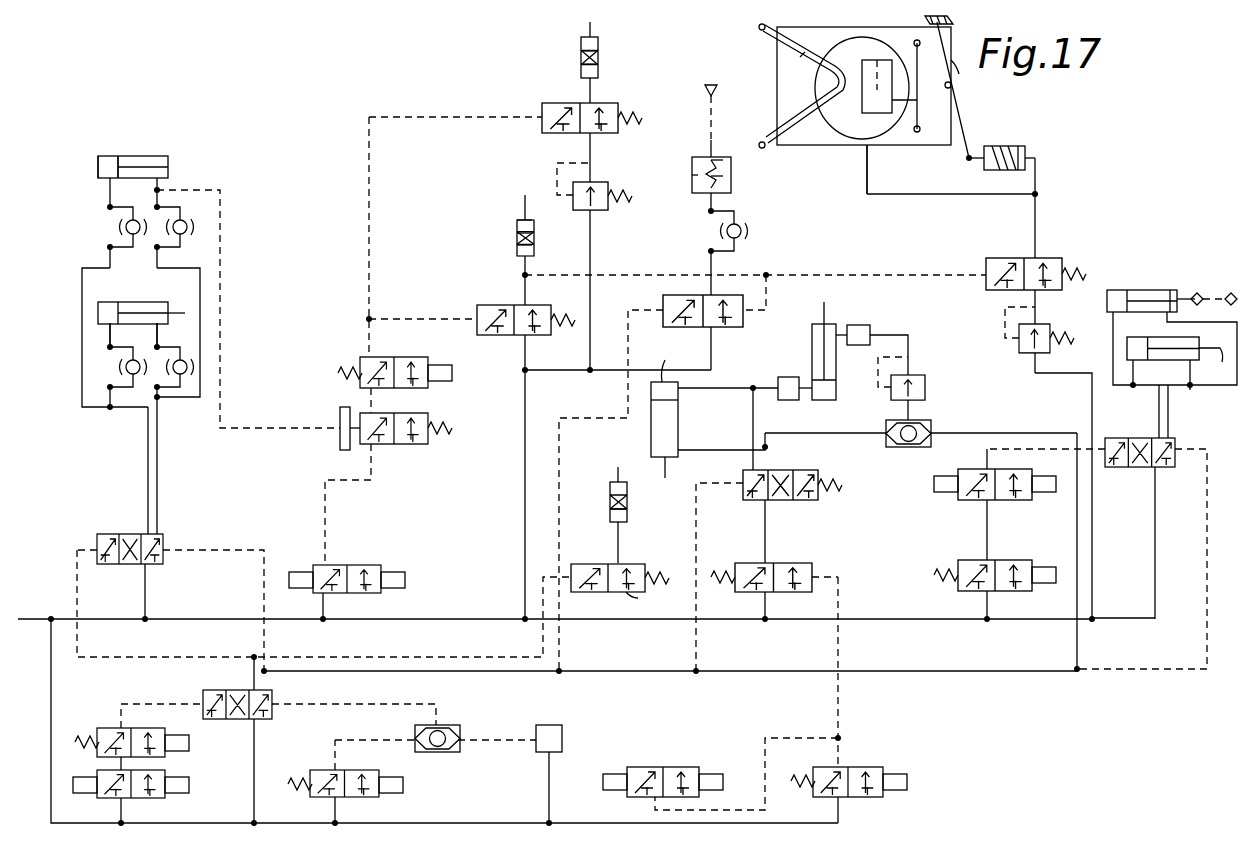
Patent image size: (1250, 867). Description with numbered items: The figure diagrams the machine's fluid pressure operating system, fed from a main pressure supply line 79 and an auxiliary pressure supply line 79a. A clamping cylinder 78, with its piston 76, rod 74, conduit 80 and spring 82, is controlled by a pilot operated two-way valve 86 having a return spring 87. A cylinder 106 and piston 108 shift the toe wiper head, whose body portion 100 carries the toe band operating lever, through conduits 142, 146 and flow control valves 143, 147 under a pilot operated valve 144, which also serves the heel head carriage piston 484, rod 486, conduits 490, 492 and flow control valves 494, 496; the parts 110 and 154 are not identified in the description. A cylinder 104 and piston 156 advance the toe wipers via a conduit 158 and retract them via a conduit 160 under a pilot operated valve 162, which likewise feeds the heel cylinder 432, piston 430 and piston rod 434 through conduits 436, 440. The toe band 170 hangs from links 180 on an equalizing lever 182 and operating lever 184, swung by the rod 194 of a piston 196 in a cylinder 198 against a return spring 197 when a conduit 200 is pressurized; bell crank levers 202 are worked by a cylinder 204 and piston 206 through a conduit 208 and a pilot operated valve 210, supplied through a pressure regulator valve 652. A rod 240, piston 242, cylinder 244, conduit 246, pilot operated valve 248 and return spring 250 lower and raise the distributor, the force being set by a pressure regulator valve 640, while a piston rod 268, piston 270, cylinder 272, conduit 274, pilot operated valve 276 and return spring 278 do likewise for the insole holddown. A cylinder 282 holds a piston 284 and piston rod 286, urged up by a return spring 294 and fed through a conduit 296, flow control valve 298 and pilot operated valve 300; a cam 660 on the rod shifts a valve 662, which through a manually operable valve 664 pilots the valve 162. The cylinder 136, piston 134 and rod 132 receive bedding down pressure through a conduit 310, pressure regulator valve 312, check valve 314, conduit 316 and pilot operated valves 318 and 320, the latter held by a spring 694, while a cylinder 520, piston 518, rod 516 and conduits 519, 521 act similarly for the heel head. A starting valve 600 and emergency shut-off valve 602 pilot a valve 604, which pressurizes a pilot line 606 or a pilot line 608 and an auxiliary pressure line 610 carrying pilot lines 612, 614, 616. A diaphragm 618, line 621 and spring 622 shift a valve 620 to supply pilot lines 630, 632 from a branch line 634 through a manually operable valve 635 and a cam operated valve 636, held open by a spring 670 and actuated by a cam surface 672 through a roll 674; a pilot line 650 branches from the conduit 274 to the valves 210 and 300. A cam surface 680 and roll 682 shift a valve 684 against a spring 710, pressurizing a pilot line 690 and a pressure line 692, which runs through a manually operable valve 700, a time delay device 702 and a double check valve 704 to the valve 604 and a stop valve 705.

The supply pressure line 79 is at (32, 617).
The supply pressure line 79a is at (51, 722).
The valve line 74 is at (610, 483).
The valve element 76 is at (627, 509).
The solenoid 78 is at (610, 495).
The line 80 is at (620, 543).
The cylinder 82 is at (140, 302).
The valve outlet 86 is at (633, 599).
The valve 87 is at (672, 574).
The hand lever 100 is at (953, 18).
The cylinder 104 is at (1165, 290).
The cylinder 106 is at (150, 160).
The cylinder end 108 is at (98, 168).
The piston 110 is at (168, 168).
The cylinder 132 is at (824, 324).
The block 134 is at (836, 384).
The line 136 is at (812, 345).
The line 142 is at (110, 194).
The check valve 143 is at (105, 228).
The valve 144 is at (102, 538).
The line 146 is at (160, 184).
The check valve 147 is at (185, 228).
The piston rod 154 is at (1178, 290).
The line 156 is at (1123, 290).
The line 158 is at (1118, 336).
The line 160 is at (1190, 328).
The valve 162 is at (1172, 442).
The arm 170 is at (799, 62).
The housing 180 is at (760, 27).
The lever link 182 is at (959, 74).
The link 184 is at (960, 140).
The line 194 is at (970, 192).
The line 196 is at (1025, 158).
The element 197 is at (1018, 146).
The valve 198 is at (1000, 146).
The line 200 is at (1037, 180).
The arm 202 is at (790, 48).
The cylinder 204 is at (862, 64).
The link 206 is at (922, 86).
The line 208 is at (868, 178).
The valve 210 is at (1036, 258).
The line 240 is at (587, 30).
The element 242 is at (581, 68).
The solenoid 244 is at (598, 56).
The spring 246 is at (591, 96).
The valve 248 is at (560, 103).
The element 250 is at (581, 53).
The solenoid 268 is at (517, 215).
The element 270 is at (517, 255).
The element 272 is at (532, 232).
The pilot line 274 is at (536, 270).
The valve 276 is at (512, 305).
The element 278 is at (517, 235).
The spring 282 is at (731, 178).
The port 284 is at (693, 178).
The relief valve 286 is at (708, 142).
The element 294 is at (731, 162).
The check valve 296 is at (725, 209).
The line 298 is at (698, 243).
The valve 300 is at (663, 297).
The line 310 is at (895, 335).
The regulator valve 312 is at (925, 388).
The shuttle valve 314 is at (931, 428).
The line 316 is at (816, 433).
The valve 318 is at (795, 468).
The valve 320 is at (807, 562).
The cylinder 430 is at (1154, 336).
The line 432 is at (1170, 376).
The piston rod 434 is at (1215, 365).
The line 436 is at (1127, 372).
The line 440 is at (1190, 387).
The valve block 484 is at (141, 339).
The piston rod 486 is at (172, 313).
The line 490 is at (157, 347).
The line 492 is at (110, 336).
The check valve 494 is at (183, 364).
The check valve 496 is at (105, 368).
The line 516 is at (678, 458).
The line 518 is at (684, 366).
The piston rod 519 is at (687, 446).
The cylinder 520 is at (679, 418).
The line 521 is at (746, 384).
The valve 600 is at (113, 728).
The valve 602 is at (114, 802).
The valve 604 is at (210, 690).
The pilot line 606 is at (152, 657).
The pilot line 608 is at (215, 550).
The line 610 is at (423, 678).
The pilot line 612 is at (609, 418).
The pilot line 614 is at (698, 544).
The pilot line 616 is at (1207, 522).
The actuator 618 is at (339, 445).
The valve 620 is at (383, 413).
The pilot line 621 is at (220, 279).
The spring 622 is at (452, 424).
The pilot line 630 is at (375, 191).
The pilot line 632 is at (391, 320).
The pilot line 634 is at (326, 526).
The valve 635 is at (345, 557).
The valve 636 is at (374, 357).
The regulator valve 640 is at (595, 182).
The pilot line 650 is at (746, 274).
The regulator valve 652 is at (1040, 324).
The pressure port 660 is at (708, 85).
The valve 662 is at (999, 560).
The valve 664 is at (1016, 500).
The spring 670 is at (338, 370).
The connector 672 is at (1197, 292).
The actuator 674 is at (455, 367).
The connector 680 is at (1231, 293).
The actuator 682 is at (911, 787).
The valve 684 is at (869, 767).
The pilot line 690 is at (838, 738).
The pilot line 692 is at (317, 704).
The spring 694 is at (724, 585).
The valve 700 is at (678, 770).
The block 702 is at (558, 725).
The shuttle valve 704 is at (450, 725).
The valve 705 is at (346, 772).
The spring 710 is at (790, 780).